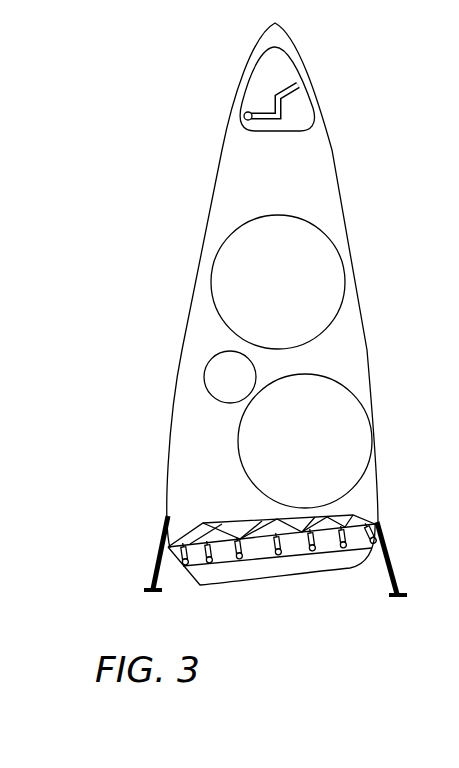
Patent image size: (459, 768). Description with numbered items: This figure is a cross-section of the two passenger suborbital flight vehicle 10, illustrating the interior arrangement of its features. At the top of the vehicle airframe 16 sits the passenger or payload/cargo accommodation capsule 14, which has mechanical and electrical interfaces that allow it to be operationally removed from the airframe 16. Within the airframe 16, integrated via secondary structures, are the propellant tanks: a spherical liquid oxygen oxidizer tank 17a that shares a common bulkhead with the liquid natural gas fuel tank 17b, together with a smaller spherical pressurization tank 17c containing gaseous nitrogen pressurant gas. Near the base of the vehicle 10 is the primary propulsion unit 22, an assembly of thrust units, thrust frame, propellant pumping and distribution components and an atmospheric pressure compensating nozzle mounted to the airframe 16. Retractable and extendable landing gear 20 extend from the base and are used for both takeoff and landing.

The suborbital flight vehicle 10 is at (150, 169).
The accommodation capsule 14 is at (252, 98).
The vehicle airframe 16 is at (217, 220).
The liquid oxygen oxidizer tank 17a is at (303, 269).
The liquid natural gas fuel tank 17b is at (342, 429).
The pressurization tank 17c is at (230, 377).
The landing gear 20 is at (153, 560).
The primary propulsion unit 22 is at (273, 591).